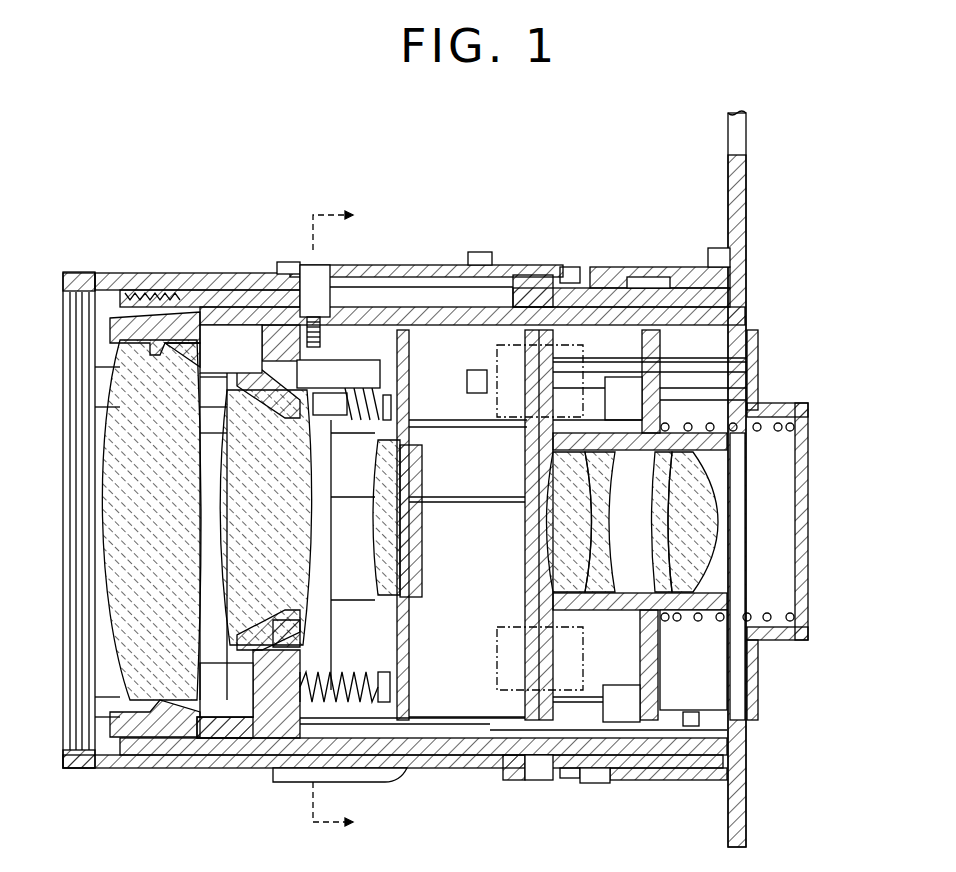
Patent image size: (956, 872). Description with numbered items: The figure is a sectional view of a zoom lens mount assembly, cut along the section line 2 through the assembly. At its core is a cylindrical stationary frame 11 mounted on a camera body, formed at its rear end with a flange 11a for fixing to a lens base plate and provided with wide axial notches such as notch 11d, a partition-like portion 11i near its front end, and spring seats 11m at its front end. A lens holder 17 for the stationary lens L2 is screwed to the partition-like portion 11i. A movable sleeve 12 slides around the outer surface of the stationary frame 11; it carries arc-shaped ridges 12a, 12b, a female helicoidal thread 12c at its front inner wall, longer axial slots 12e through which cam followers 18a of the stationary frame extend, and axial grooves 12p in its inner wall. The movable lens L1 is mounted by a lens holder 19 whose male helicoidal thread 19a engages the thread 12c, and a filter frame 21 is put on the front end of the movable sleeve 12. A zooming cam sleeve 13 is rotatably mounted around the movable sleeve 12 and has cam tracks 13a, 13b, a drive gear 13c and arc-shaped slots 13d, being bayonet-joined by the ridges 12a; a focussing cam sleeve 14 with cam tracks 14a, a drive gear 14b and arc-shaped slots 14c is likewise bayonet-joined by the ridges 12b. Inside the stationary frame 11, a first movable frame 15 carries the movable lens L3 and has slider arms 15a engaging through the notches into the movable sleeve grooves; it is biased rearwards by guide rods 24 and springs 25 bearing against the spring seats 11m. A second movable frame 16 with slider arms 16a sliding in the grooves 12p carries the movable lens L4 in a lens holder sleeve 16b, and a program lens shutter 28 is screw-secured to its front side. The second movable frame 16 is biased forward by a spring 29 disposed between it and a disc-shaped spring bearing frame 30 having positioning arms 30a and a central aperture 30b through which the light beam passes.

The section line 2 is at (343, 527).
The stationary frame 11 is at (416, 316).
The flange 11a is at (740, 222).
The wide notch 11d is at (442, 740).
The partition-like portion 11i is at (246, 722).
The spring seat 11m is at (215, 385).
The movable sleeve 12 is at (667, 300).
The arc-shaped ridge 12a is at (507, 292).
The arc-shaped ridge 12b is at (567, 292).
The female helicoidal thread 12c is at (140, 292).
The axial slot 12e is at (378, 300).
The axial groove 12p is at (478, 372).
The zooming cam sleeve 13 is at (372, 266).
The cam track 13a is at (318, 276).
The cam track 13b is at (395, 784).
The drive gear 13c is at (478, 253).
The arc-shaped slot 13d is at (533, 782).
The focussing cam sleeve 14 is at (596, 290).
The cam track 14a is at (642, 283).
The drive gear 14b is at (718, 254).
The arc-shaped slot 14c is at (612, 778).
The first movable frame 15 is at (406, 625).
The slider arm 15a is at (476, 503).
The second movable frame 16 is at (641, 650).
The slider arm 16a is at (500, 400).
The lens holder sleeve 16b is at (693, 660).
The lens holder 17 is at (300, 675).
The cam follower 18a is at (312, 266).
The lens holder 19 is at (168, 318).
The male helicoidal thread 19a is at (112, 737).
The filter frame 21 is at (94, 284).
The guide rod 24 is at (368, 391).
The spring 25 is at (420, 683).
The program lens shutter 28 is at (525, 572).
The spring 29 is at (780, 427).
The spring bearing frame 30 is at (782, 410).
The positioning arm 30a is at (738, 478).
The aperture 30b is at (802, 565).
The movable lens L1 is at (110, 522).
The stationary lens L2 is at (305, 530).
The movable lens L3 is at (412, 545).
The movable lens L4 is at (712, 532).